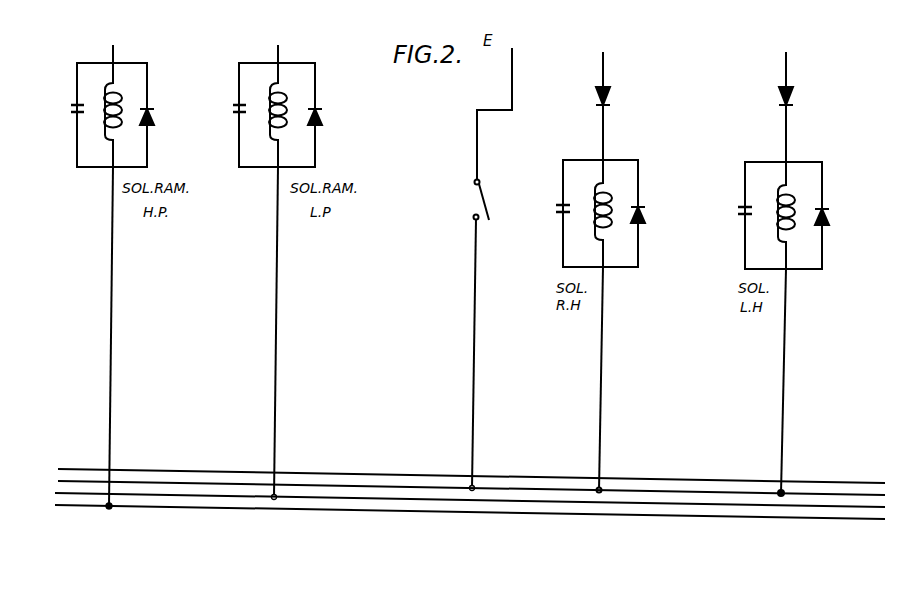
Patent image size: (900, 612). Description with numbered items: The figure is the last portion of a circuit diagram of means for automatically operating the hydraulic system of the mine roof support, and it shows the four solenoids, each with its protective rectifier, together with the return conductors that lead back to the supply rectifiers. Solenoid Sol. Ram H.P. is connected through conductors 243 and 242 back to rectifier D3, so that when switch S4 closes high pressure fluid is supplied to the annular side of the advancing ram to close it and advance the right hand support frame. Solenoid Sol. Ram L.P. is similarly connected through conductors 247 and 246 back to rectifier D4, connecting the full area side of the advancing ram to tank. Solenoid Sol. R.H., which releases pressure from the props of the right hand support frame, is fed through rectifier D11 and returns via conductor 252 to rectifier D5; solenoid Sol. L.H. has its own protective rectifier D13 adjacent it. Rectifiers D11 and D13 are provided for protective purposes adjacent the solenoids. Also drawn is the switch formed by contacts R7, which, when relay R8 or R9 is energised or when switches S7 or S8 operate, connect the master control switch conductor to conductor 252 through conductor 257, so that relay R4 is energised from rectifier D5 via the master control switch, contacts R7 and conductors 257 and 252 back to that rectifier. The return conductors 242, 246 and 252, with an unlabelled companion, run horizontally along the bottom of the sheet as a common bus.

The conductor 242 is at (147, 507).
The conductor 243 is at (112, 237).
The conductor 246 is at (323, 497).
The conductor 247 is at (303, 247).
The conductor 252 is at (833, 460).
The conductor 257 is at (475, 302).
The contacts R7_1 R7 is at (493, 134).
The rectifier D11 is at (630, 70).
The rectifier D13 is at (805, 72).